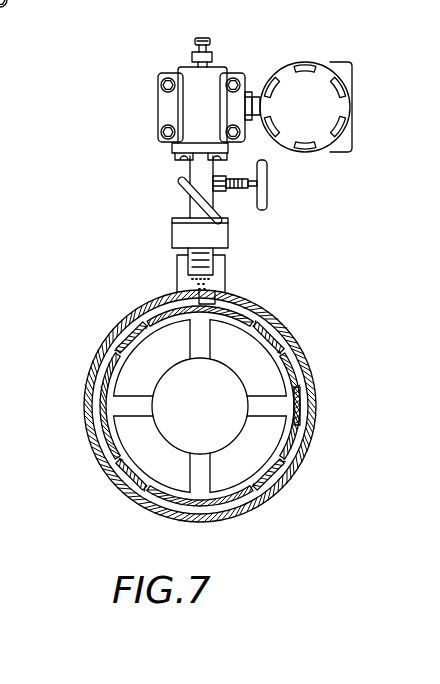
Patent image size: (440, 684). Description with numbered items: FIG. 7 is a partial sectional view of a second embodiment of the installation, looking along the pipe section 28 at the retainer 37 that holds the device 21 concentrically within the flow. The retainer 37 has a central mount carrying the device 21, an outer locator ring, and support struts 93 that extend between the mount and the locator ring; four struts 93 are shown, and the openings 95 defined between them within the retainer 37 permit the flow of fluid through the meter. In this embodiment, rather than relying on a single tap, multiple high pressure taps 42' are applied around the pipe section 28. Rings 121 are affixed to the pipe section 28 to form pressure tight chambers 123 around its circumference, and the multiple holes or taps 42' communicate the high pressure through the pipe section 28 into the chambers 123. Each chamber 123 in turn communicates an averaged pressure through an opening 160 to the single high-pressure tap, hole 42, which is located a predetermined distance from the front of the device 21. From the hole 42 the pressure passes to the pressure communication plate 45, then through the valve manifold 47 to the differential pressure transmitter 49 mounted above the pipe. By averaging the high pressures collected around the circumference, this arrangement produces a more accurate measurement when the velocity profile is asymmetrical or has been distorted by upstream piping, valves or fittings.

The differential pressure transmitter 49 is at (203, 82).
The valve manifold 47 is at (190, 172).
The pressure communication plate 45 is at (222, 236).
The hole 42 is at (260, 267).
The opening 160 is at (238, 292).
The retainer 37 is at (104, 345).
The pipe section 28 is at (318, 402).
The pressure tight chambers 123 is at (258, 322).
The rings 121 is at (300, 430).
The high pressure taps 42' is at (208, 402).
The openings 95 is at (124, 388).
The support struts 93 is at (198, 329).
The device 21 is at (211, 416).